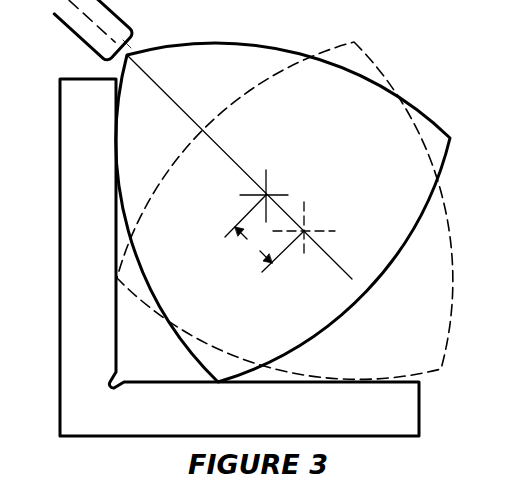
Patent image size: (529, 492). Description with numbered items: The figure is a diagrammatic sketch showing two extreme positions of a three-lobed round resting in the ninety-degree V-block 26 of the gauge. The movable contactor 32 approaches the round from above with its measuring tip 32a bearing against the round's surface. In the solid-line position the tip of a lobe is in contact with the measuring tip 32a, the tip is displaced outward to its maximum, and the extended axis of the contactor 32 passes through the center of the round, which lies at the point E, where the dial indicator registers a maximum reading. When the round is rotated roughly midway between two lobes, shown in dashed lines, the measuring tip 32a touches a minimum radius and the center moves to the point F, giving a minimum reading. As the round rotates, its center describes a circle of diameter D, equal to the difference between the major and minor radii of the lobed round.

The V-block 26 is at (144, 381).
The contactor 32 is at (75, 35).
The measuring tip 32a is at (129, 52).
The point E is at (268, 192).
The point F is at (304, 228).
The diameter D is at (264, 233).